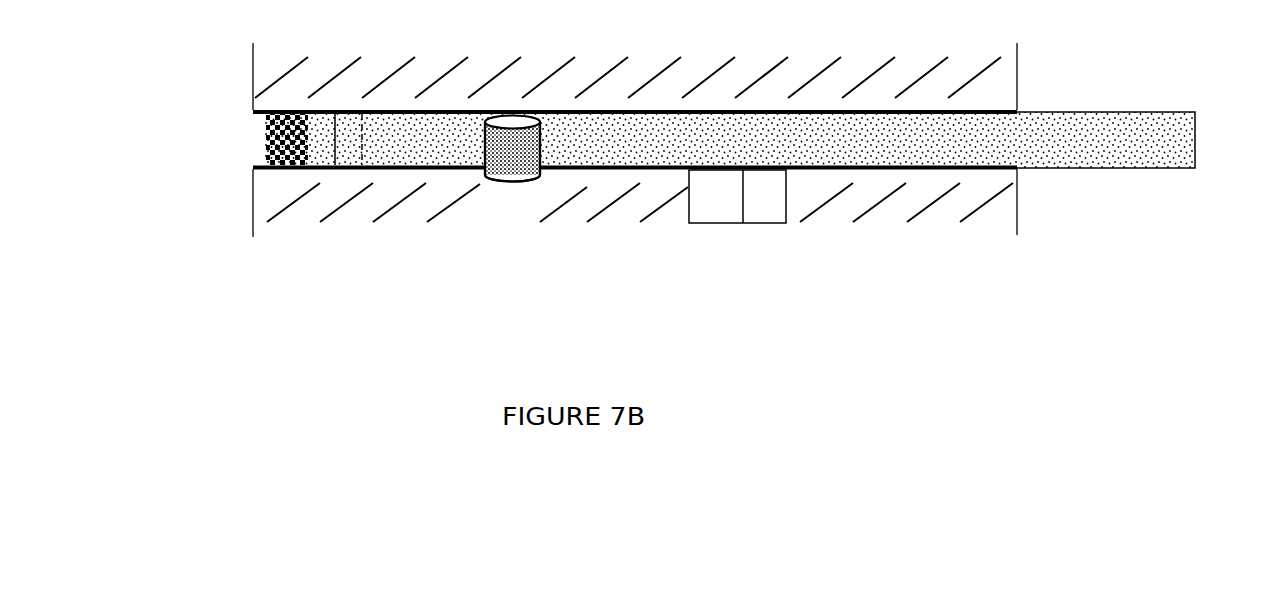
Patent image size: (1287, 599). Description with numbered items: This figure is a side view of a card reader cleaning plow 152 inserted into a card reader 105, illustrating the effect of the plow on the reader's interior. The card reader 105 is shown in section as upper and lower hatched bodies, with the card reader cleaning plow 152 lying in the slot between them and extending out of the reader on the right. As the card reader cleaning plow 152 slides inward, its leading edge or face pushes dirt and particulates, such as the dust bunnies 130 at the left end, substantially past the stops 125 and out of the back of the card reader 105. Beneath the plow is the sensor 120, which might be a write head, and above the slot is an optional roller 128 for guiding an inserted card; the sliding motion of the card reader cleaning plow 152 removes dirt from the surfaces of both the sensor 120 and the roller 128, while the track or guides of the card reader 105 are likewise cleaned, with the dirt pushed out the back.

The card reader 105 is at (948, 223).
The sensor 120 is at (730, 223).
The stops 125 is at (348, 170).
The roller 128 is at (512, 182).
The dust bunnies 130 is at (277, 143).
The card reader cleaning plow 152 is at (1127, 168).